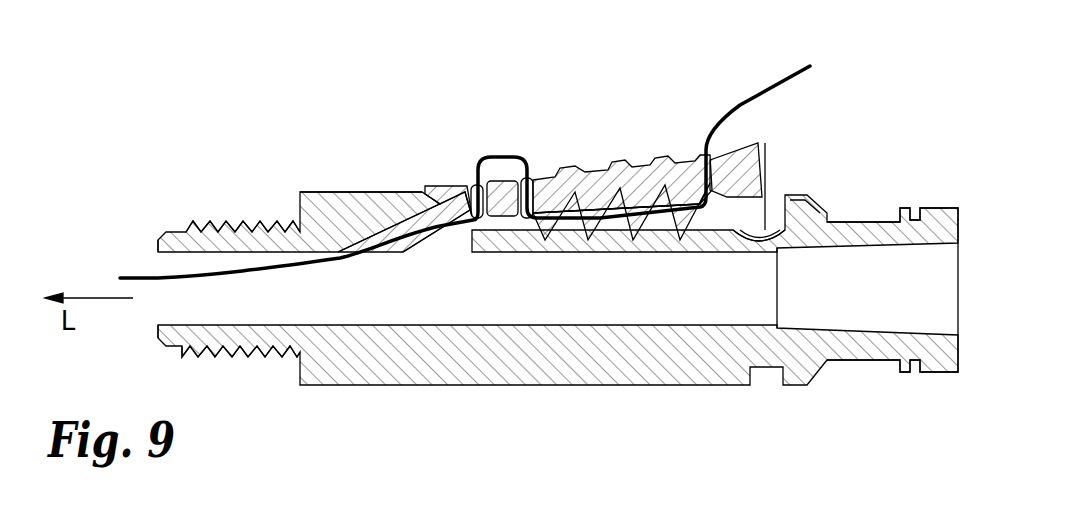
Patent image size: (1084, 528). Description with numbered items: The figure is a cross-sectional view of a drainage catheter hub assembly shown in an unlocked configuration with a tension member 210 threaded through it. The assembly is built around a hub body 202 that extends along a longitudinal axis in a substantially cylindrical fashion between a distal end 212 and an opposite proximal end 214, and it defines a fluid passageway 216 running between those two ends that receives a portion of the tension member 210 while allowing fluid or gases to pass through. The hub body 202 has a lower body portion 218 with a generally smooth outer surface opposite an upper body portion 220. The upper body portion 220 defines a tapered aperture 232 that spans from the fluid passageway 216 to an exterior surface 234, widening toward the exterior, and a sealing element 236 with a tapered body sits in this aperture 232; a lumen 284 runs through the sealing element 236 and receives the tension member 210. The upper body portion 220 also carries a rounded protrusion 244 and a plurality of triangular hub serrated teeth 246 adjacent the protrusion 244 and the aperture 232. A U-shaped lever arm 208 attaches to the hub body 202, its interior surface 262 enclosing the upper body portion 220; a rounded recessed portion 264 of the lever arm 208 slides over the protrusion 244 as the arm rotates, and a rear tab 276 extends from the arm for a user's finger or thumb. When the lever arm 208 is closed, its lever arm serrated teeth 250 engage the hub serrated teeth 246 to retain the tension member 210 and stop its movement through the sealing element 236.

The hub body 202 is at (580, 367).
The lever arm 208 is at (598, 172).
The tension member 210 is at (758, 97).
The distal end 212 is at (310, 370).
The proximal end 214 is at (733, 350).
The fluid passageway 216 is at (180, 308).
The lower body portion 218 is at (352, 373).
The upper body portion 220 is at (318, 202).
The aperture 232 is at (388, 240).
The exterior surface 234 is at (330, 190).
The sealing element 236 is at (455, 212).
The protrusion 244 is at (392, 190).
The hub serrated teeth 246 is at (660, 228).
The lever arm serrated teeth 250 is at (637, 190).
The interior surface 262 is at (735, 200).
The recessed portion 264 is at (440, 190).
The rear tab 276 is at (752, 158).
The lumen 284 is at (445, 236).